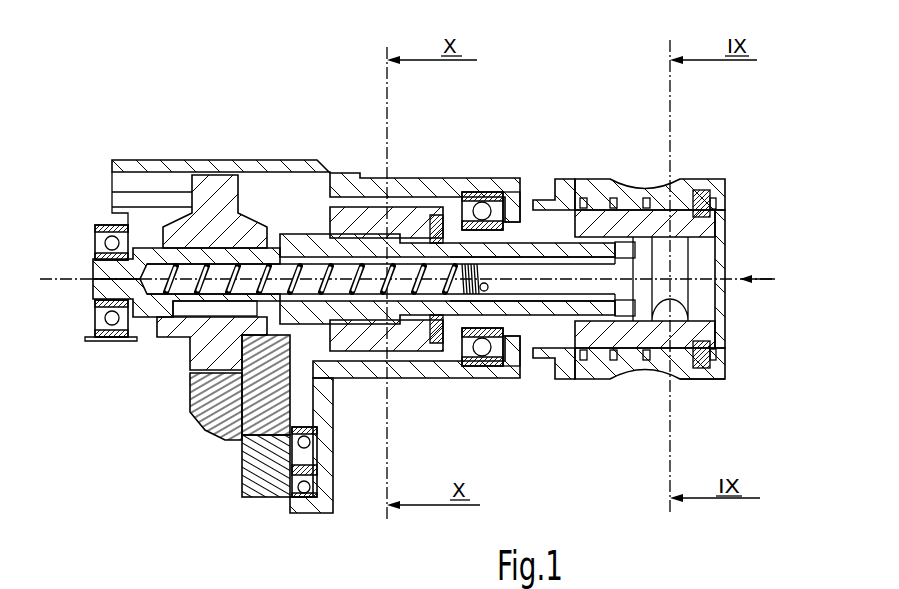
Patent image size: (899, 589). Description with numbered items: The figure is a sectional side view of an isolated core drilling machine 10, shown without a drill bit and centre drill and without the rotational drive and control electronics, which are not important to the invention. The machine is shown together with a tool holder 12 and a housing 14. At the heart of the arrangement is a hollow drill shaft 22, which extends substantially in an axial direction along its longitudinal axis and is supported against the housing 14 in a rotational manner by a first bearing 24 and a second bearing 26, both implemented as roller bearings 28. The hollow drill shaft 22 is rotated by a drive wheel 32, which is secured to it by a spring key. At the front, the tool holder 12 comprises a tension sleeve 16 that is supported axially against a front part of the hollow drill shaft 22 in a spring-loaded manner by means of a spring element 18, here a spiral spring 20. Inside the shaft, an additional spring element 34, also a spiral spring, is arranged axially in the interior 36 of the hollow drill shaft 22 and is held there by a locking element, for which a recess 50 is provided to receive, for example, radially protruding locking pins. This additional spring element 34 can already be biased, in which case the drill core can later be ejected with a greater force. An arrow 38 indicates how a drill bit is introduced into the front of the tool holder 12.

The core drilling machine 10 is at (321, 122).
The tool holder 12 is at (652, 168).
The housing 14 is at (134, 158).
The tension sleeve 16 is at (684, 378).
The spring element 18 is at (596, 376).
The spiral spring 20 is at (601, 204).
The hollow drill shaft 22 is at (91, 272).
The first bearing 24 is at (107, 357).
The second bearing 26 is at (491, 176).
The roller bearings 28 is at (94, 318).
The drive wheel 32 is at (213, 216).
The additional spring element 34 is at (366, 296).
The interior 36 is at (614, 282).
The arrow 38 is at (759, 278).
The recess 50 is at (488, 283).